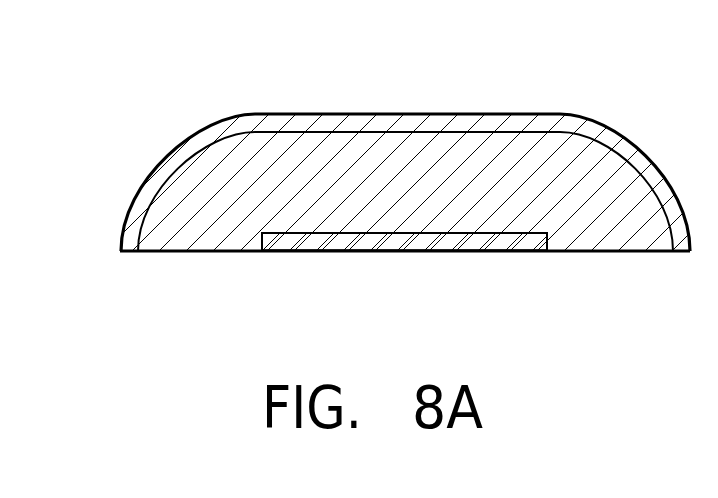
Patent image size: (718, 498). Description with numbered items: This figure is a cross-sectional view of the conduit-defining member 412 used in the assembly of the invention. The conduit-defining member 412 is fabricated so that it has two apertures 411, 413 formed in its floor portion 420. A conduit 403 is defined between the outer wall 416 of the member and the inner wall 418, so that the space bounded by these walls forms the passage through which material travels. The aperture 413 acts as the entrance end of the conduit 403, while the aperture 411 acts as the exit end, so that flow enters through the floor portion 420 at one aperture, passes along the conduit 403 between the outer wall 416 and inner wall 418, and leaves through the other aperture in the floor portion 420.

The conduit 403 is at (358, 200).
The aperture 411 is at (609, 238).
The conduit-defining member 412 is at (523, 113).
The aperture 413 is at (194, 238).
The outer wall 416 is at (460, 133).
The inner wall 418 is at (426, 236).
The floor portion 420 is at (347, 251).